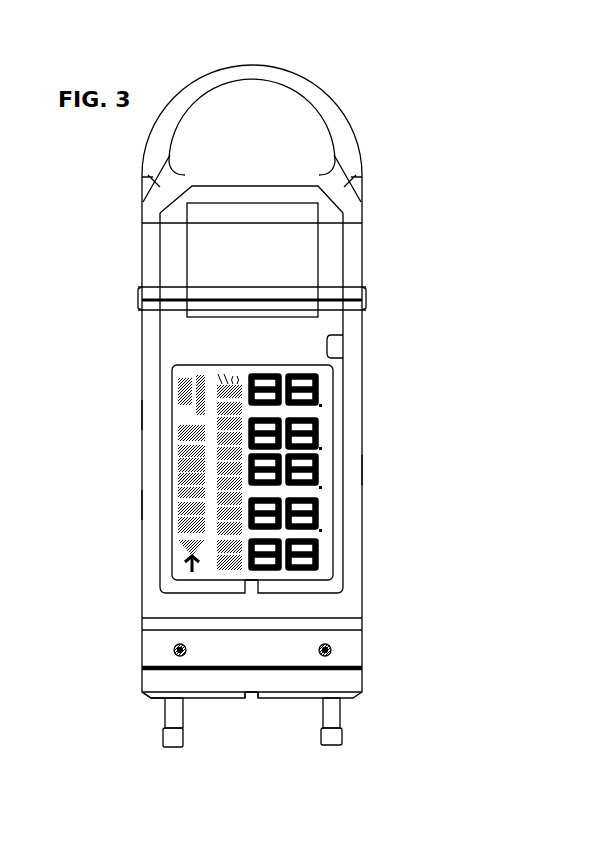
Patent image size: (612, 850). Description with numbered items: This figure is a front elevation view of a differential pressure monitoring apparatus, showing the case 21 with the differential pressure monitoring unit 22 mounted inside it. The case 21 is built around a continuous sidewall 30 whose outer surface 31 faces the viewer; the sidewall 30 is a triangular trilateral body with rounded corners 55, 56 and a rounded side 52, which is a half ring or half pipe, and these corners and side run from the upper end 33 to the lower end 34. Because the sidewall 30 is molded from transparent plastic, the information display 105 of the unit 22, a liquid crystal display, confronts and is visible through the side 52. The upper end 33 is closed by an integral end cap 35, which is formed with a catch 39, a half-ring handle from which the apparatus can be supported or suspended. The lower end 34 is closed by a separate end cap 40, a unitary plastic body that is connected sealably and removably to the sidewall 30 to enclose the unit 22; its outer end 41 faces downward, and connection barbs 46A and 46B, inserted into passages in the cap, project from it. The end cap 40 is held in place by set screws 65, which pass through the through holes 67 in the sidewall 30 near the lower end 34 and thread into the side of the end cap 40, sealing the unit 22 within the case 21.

The catch 39 is at (293, 87).
The end cap 35 is at (350, 258).
The upper end 33 is at (365, 298).
The outer surface 31 is at (347, 347).
The continuous sidewall 30 is at (363, 393).
The corner 55 is at (363, 468).
The information display 105 is at (323, 508).
The side 52 is at (202, 337).
The case 21 is at (140, 417).
The corner 56 is at (140, 507).
The differential pressure monitoring unit 22 is at (163, 588).
The through holes 67 is at (330, 645).
The lower end 34 is at (363, 653).
The end cap 40 is at (157, 702).
The outer end 41 is at (228, 703).
The connection barb 46B is at (162, 745).
The set screws 65 is at (327, 655).
The connection barb 46A is at (340, 743).